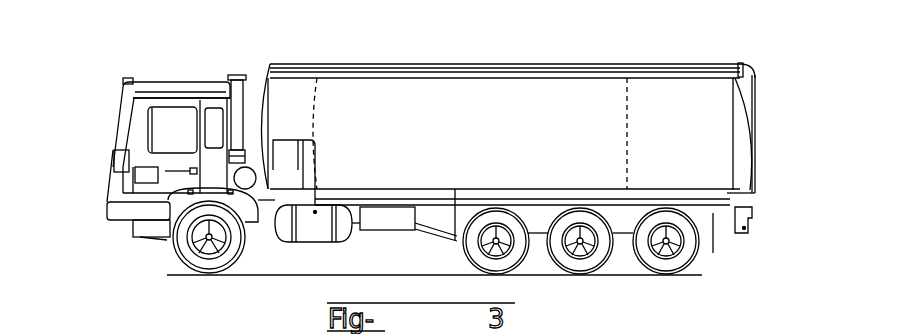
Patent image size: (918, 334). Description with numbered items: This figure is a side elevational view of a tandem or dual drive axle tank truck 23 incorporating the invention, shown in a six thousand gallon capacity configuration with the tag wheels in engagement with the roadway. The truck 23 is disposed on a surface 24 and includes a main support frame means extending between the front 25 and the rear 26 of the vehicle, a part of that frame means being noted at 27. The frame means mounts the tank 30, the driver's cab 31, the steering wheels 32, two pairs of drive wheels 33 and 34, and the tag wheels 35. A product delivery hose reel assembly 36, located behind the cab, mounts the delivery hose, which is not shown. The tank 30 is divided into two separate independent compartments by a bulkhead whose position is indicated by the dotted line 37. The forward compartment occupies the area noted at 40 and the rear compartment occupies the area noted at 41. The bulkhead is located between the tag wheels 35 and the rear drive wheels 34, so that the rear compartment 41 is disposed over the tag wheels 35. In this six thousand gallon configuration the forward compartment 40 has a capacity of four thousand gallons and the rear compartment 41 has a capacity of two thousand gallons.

The truck 23 is at (449, 62).
The surface 24 is at (702, 275).
The front 25 is at (108, 142).
The rear 26 is at (763, 116).
The frame means 27 is at (112, 213).
The tank 30 is at (512, 138).
The driver's cab 31 is at (151, 80).
The steering wheels 32 is at (158, 264).
The drive wheels 33 is at (490, 210).
The rear drive wheels 34 is at (573, 212).
The tag wheels 35 is at (665, 212).
The product delivery hose reel assembly 36 is at (291, 140).
The dotted line 37 is at (637, 97).
The forward compartment 40 is at (415, 120).
The rear compartment 41 is at (678, 131).